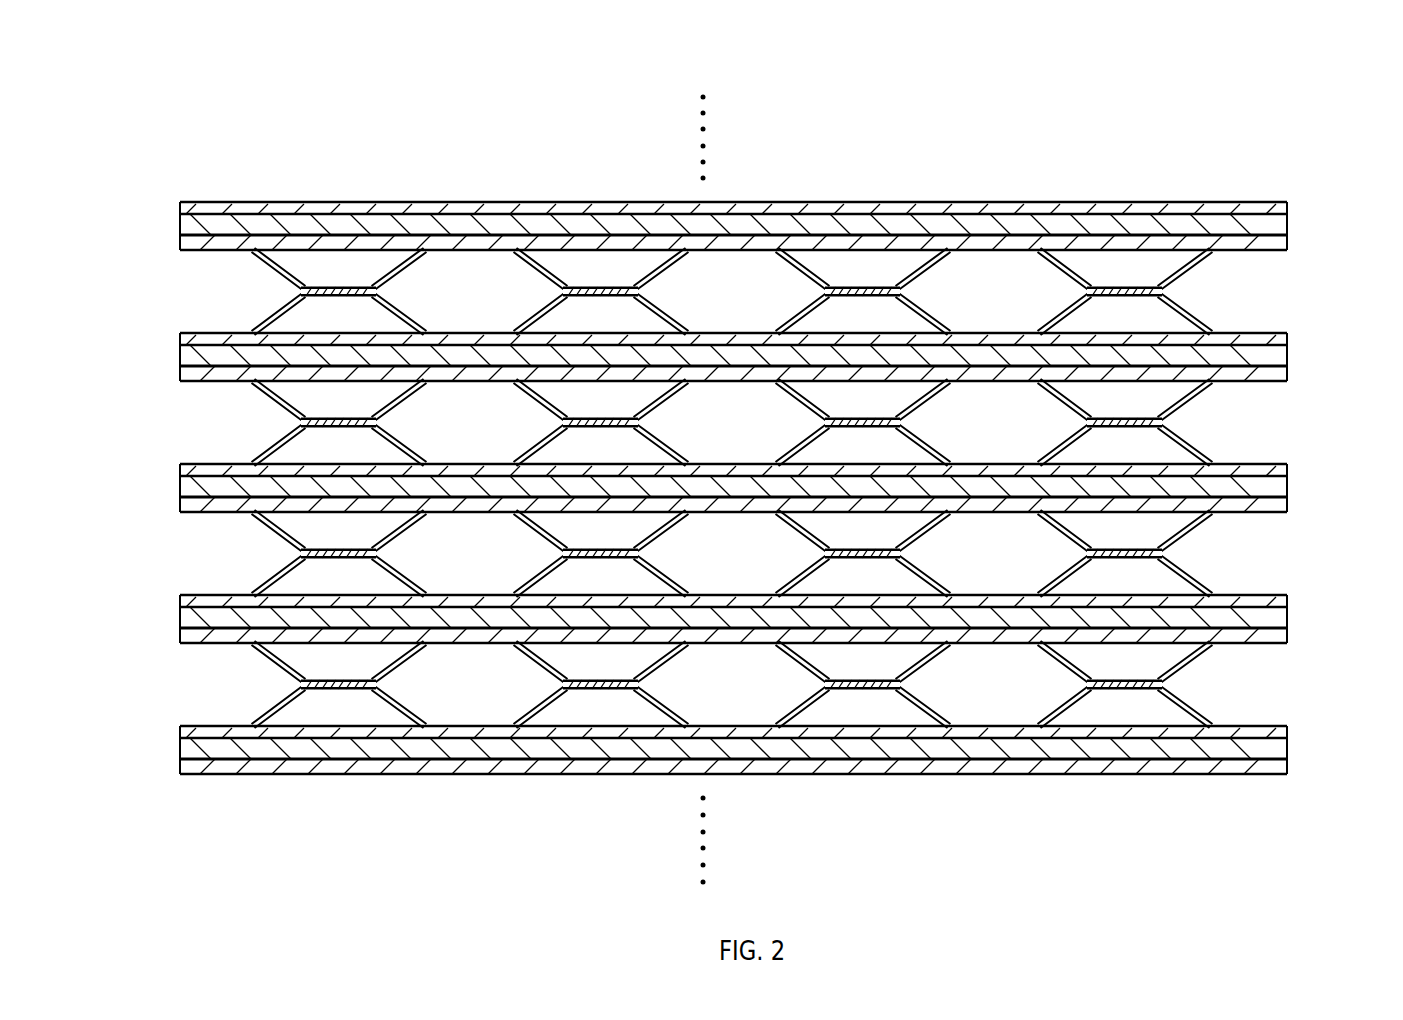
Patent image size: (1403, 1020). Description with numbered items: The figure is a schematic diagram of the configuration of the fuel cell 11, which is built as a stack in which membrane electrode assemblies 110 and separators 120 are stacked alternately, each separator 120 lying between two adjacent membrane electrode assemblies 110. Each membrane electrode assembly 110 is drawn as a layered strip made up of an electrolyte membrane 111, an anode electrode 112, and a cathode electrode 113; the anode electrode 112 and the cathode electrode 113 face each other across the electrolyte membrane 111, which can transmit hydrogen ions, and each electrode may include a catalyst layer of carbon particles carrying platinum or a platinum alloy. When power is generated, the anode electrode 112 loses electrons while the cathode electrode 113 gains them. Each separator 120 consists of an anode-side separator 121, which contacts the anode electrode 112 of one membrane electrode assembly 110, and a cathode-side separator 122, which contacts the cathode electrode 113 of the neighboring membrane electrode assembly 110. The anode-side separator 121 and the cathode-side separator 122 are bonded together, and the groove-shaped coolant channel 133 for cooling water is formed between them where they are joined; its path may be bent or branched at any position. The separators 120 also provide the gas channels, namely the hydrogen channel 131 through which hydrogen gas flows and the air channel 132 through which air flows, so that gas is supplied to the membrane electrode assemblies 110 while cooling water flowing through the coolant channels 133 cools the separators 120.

The fuel cell 11 is at (174, 120).
The membrane electrode assembly 110 is at (663, 491).
The electrolyte membrane 111 is at (180, 224).
The anode electrode 112 is at (180, 208).
The cathode electrode 113 is at (695, 521).
The separator 120 is at (826, 488).
The anode-side separator 121 is at (796, 510).
The cathode-side separator 122 is at (1253, 251).
The hydrogen channel 131 is at (310, 578).
The air channel 132 is at (380, 529).
The coolant channel 133 is at (482, 553).